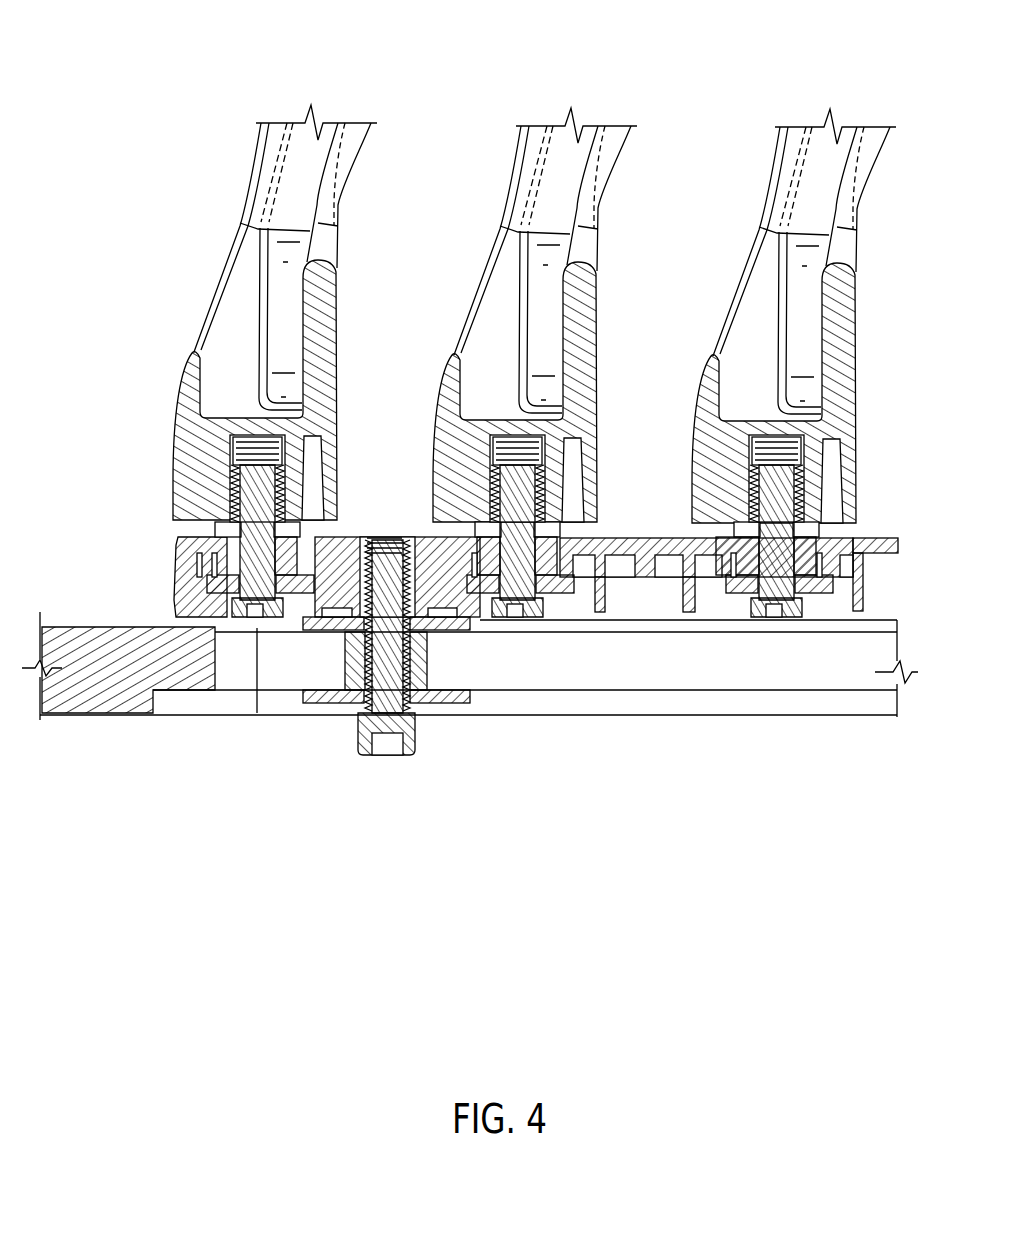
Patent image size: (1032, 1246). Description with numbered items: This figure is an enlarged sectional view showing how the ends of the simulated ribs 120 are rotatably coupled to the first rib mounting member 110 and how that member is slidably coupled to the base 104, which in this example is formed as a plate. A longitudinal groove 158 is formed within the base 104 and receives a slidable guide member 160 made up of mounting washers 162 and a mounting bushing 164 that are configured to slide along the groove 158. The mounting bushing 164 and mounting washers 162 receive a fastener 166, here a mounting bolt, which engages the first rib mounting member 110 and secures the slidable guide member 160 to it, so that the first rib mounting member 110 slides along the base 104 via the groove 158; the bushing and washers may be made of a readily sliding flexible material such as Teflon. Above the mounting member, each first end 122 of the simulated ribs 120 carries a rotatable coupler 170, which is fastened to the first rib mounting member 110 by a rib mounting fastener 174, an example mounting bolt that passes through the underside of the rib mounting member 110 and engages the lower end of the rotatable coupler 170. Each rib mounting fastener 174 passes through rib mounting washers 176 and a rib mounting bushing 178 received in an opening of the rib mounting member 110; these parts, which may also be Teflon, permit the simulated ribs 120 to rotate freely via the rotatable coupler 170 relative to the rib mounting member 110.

The base 104 is at (671, 726).
The first rib mounting member 110 is at (178, 557).
The simulated ribs 120 is at (778, 153).
The first end 122 is at (193, 341).
The longitudinal groove 158 is at (525, 677).
The slidable guide member 160 is at (302, 659).
The mounting washers 162 is at (463, 625).
The mounting bushing 164 is at (360, 667).
The fastener 166 is at (410, 747).
The rotatable coupler 170 is at (168, 435).
The rib mounting fastener 174 is at (243, 545).
The rib mounting washers 176 is at (210, 588).
The rib mounting bushing 178 is at (305, 527).